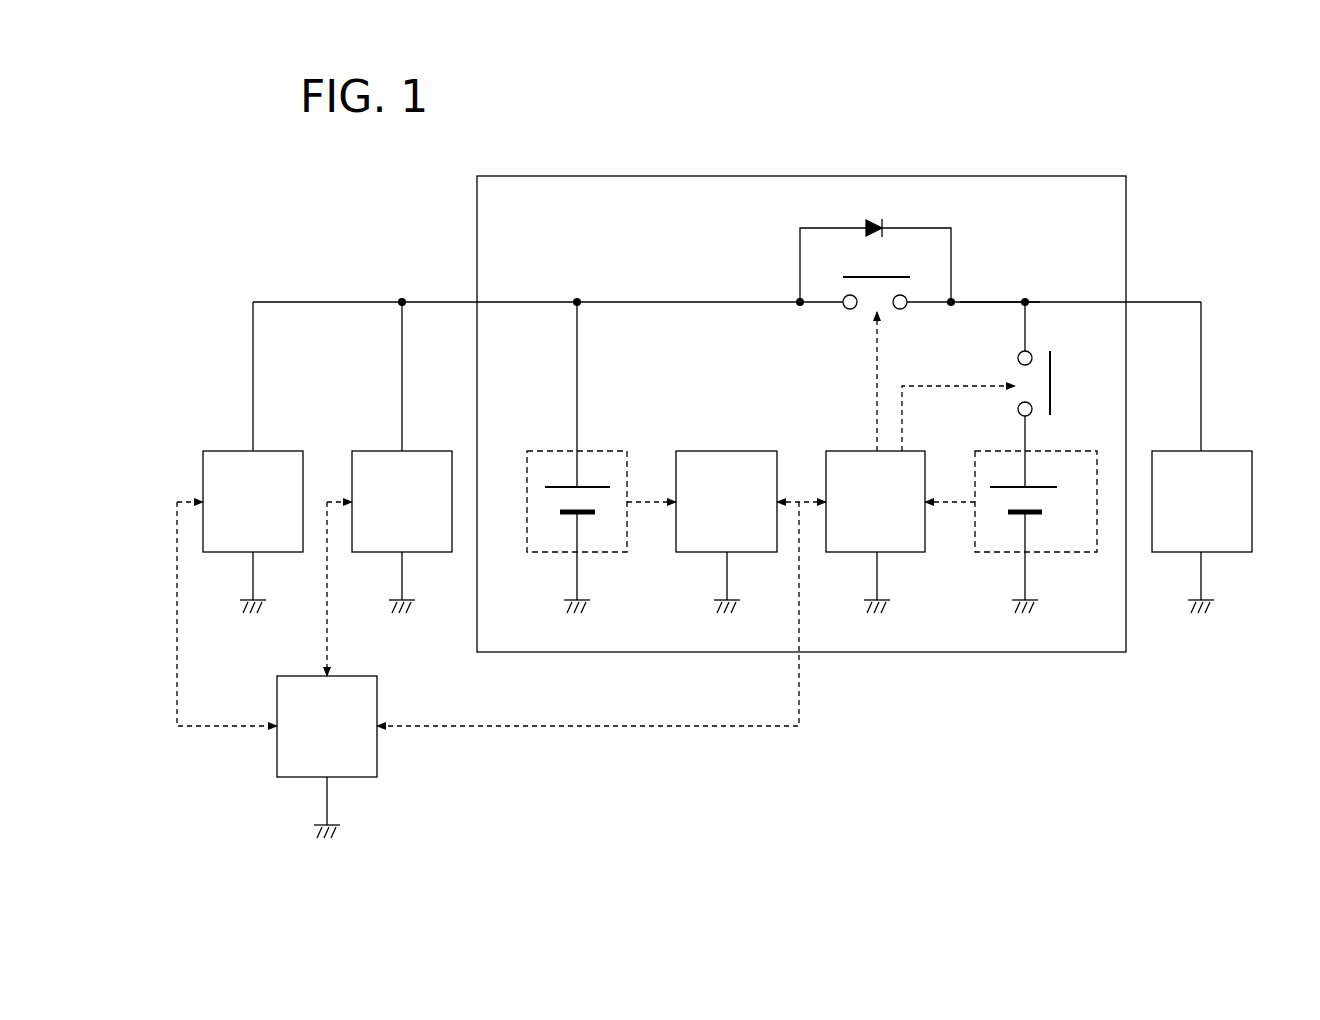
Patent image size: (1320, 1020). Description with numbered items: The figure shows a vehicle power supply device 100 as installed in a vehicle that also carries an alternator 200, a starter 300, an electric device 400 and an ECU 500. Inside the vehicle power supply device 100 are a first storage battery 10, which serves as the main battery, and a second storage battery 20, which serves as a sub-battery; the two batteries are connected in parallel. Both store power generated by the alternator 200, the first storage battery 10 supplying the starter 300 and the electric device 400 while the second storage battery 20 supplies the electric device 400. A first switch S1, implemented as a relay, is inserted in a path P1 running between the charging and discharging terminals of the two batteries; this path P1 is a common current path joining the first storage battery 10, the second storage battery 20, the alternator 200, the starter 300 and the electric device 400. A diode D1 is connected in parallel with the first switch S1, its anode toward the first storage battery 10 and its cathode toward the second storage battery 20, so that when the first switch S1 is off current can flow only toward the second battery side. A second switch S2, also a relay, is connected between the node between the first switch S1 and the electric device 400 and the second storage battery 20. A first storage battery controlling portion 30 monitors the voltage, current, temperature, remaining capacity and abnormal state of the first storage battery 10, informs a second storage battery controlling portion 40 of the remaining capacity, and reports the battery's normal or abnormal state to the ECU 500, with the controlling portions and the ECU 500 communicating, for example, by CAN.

The vehicle power supply device 100 is at (1078, 174).
The first storage battery 10 is at (600, 447).
The second storage battery 20 is at (1050, 447).
The first storage battery controlling portion 30 is at (752, 447).
The second storage battery controlling portion 40 is at (912, 447).
The alternator 200 is at (277, 447).
The starter 300 is at (415, 447).
The electric device 400 is at (1228, 447).
The ECU 500 is at (352, 672).
The diode D1 is at (875, 245).
The first switch S1 is at (882, 278).
The second switch S2 is at (1042, 394).
The path P1 is at (984, 300).